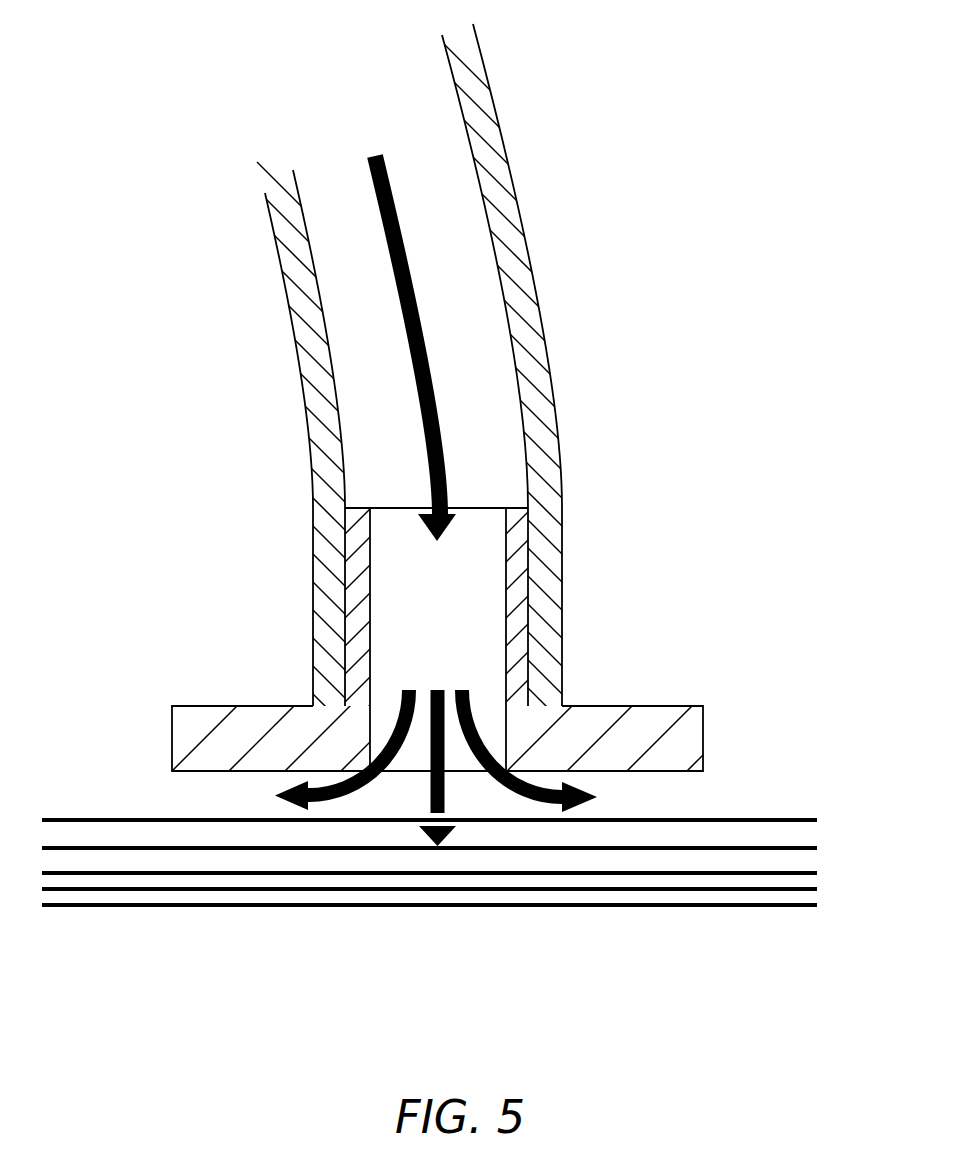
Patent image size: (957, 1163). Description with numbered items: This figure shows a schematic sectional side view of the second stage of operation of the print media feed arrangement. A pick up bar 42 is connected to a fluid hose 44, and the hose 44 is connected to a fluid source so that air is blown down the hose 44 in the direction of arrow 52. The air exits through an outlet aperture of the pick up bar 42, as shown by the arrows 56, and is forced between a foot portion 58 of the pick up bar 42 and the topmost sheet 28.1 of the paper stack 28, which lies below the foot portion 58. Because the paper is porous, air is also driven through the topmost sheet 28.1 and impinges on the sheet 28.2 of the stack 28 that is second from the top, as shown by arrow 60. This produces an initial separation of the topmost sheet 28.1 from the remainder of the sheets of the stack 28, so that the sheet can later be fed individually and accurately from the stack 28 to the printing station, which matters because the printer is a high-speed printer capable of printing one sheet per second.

The stack 28 is at (472, 830).
The topmost sheet 28.1 is at (703, 821).
The second print media layer 28.2 is at (755, 849).
The pick up bar 42 is at (594, 689).
The fluid hose 44 is at (518, 183).
The arrow 52 is at (413, 347).
The arrows 56 is at (290, 777).
The foot portion 58 is at (663, 717).
The arrow 60 is at (432, 840).